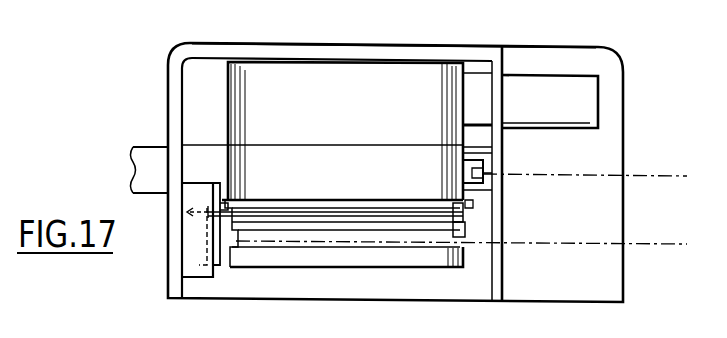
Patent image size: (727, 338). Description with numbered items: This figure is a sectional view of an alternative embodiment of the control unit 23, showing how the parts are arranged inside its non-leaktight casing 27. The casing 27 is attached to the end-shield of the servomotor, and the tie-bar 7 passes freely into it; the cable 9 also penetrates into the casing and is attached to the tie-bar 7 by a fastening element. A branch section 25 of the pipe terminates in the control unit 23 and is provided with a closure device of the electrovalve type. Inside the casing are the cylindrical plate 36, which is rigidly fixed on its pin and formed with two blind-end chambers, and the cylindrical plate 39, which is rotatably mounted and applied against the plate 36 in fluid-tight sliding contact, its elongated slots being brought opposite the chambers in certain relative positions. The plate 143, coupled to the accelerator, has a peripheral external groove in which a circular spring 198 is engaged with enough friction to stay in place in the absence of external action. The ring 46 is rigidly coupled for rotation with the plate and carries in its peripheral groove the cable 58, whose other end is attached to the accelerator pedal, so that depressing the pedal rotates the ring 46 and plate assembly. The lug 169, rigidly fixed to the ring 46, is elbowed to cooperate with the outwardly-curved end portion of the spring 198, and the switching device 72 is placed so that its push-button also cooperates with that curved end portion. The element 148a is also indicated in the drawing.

The control unit 23 is at (163, 74).
The casing 27 is at (372, 54).
The branch section 25 is at (560, 84).
The cylindrical plate 36 is at (225, 90).
The cylindrical plate 39 is at (224, 167).
The tie-bar 7 is at (133, 170).
The plate 143 is at (362, 198).
The cable 9 is at (665, 174).
The circular spring 198 is at (465, 220).
The cable 58 is at (626, 243).
The switching device 72 is at (187, 262).
The pin 148a is at (185, 213).
The lug 169 is at (223, 270).
The ring 46 is at (445, 270).